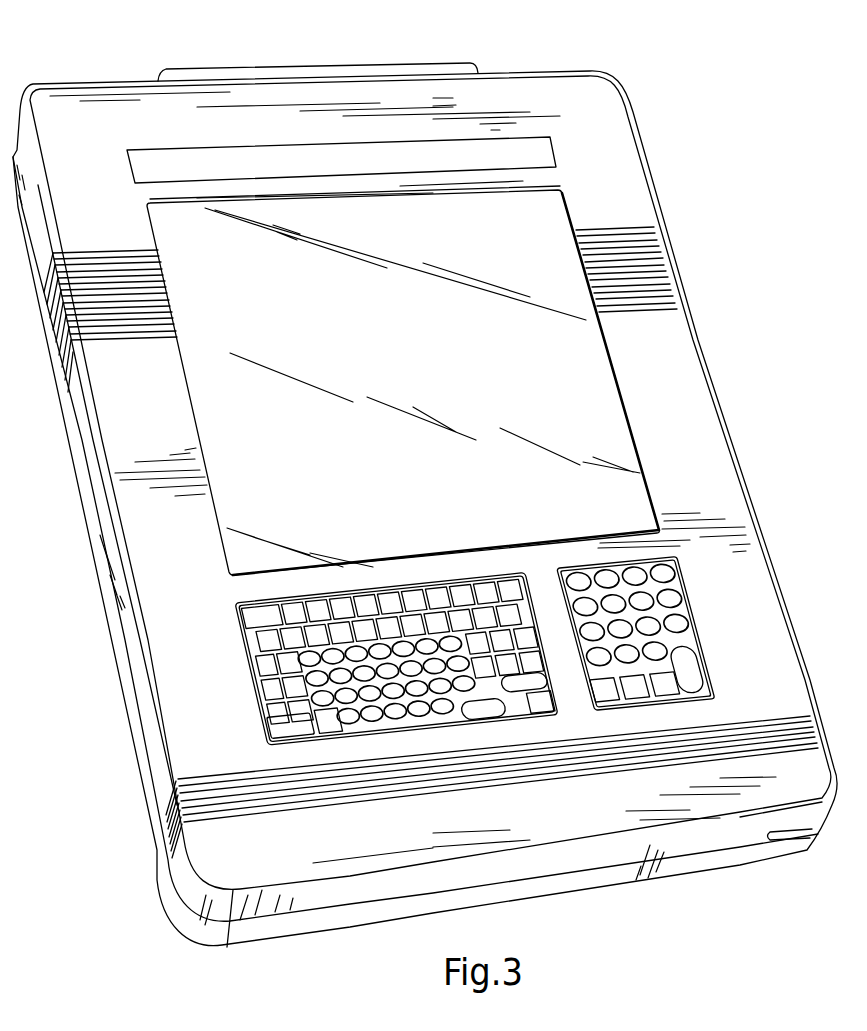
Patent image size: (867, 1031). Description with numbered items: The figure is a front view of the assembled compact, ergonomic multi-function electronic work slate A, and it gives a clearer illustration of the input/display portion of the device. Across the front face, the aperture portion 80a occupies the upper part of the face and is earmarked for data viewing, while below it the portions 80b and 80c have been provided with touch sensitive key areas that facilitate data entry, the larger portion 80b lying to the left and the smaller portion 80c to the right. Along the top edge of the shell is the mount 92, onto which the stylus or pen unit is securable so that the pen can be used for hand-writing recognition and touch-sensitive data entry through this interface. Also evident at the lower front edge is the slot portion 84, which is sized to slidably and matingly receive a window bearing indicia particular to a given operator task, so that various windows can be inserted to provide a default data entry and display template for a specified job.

The portable terminal A is at (596, 63).
The mount 92 is at (418, 62).
The aperture portion 80a is at (581, 428).
The touch sensitive key portion 80b is at (258, 675).
The touch sensitive key portion 80c is at (667, 603).
The slot portion 84 is at (790, 838).